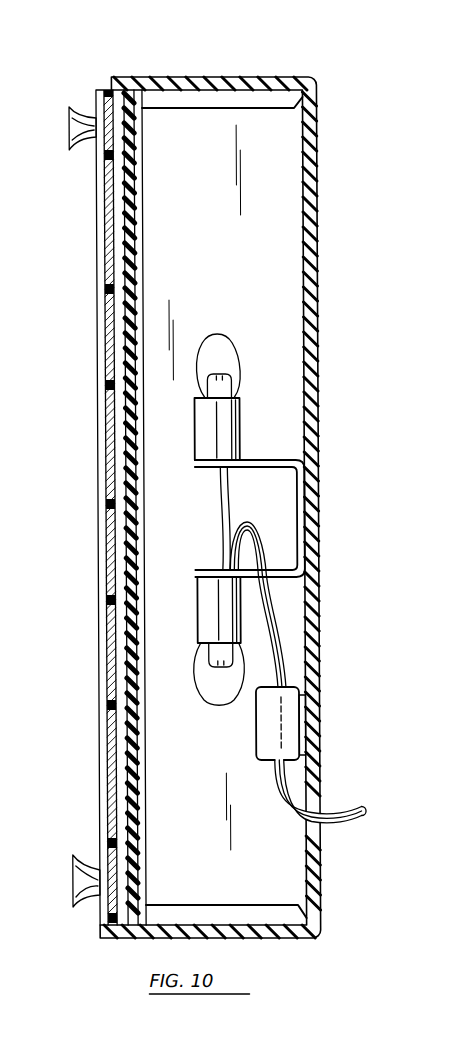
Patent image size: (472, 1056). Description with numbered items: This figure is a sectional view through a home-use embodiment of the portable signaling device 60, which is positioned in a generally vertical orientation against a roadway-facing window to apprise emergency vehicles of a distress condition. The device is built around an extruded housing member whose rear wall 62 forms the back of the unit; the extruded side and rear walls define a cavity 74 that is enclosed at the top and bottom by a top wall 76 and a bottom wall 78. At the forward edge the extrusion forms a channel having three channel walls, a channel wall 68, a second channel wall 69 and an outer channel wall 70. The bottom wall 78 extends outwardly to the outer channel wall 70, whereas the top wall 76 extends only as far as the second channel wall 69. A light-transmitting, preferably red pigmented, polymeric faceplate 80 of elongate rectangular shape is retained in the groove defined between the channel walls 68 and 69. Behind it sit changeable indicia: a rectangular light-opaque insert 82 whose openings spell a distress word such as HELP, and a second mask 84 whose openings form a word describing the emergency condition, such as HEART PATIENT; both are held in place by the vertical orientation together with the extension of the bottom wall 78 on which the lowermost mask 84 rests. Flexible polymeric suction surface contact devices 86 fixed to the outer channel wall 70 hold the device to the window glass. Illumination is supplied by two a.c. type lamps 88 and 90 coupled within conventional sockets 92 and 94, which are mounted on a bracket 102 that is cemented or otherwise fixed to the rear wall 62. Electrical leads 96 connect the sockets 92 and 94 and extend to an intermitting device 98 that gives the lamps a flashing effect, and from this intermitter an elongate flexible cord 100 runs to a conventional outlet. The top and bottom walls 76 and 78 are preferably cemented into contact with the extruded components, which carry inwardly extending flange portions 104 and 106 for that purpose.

The portable signaling device 60 is at (288, 62).
The rear wall 62 is at (318, 262).
The channel wall 68 is at (141, 155).
The second channel wall 69 is at (120, 174).
The outer channel wall 70 is at (98, 284).
The cavity 74 is at (252, 274).
The top wall 76 is at (213, 77).
The bottom wall 78 is at (283, 938).
The faceplate 80 is at (137, 242).
The insert 82 is at (107, 226).
The mask 84 is at (112, 843).
The suction surface contact devices 86 is at (71, 127).
The lamp 88 is at (223, 342).
The lamp 90 is at (207, 692).
The socket 92 is at (203, 419).
The socket 94 is at (205, 604).
The electrical leads 96 is at (248, 527).
The intermitting device 98 is at (263, 739).
The flexible cord 100 is at (337, 813).
The bracket 102 is at (260, 458).
The flange portion 104 is at (298, 112).
The flange portion 106 is at (300, 904).